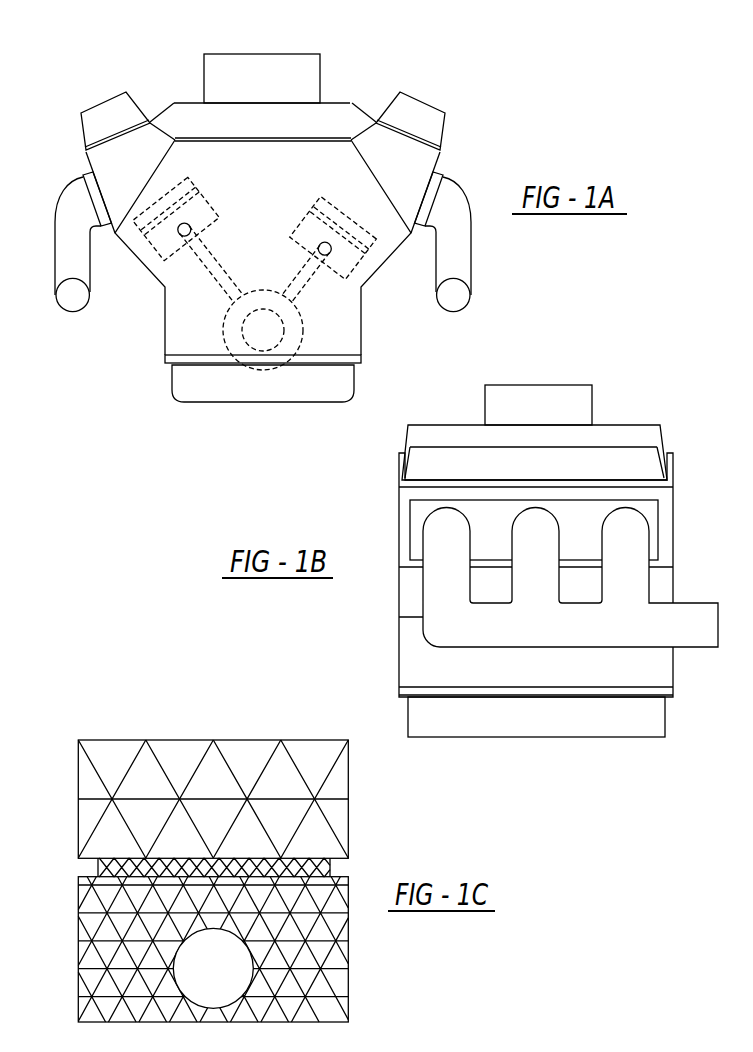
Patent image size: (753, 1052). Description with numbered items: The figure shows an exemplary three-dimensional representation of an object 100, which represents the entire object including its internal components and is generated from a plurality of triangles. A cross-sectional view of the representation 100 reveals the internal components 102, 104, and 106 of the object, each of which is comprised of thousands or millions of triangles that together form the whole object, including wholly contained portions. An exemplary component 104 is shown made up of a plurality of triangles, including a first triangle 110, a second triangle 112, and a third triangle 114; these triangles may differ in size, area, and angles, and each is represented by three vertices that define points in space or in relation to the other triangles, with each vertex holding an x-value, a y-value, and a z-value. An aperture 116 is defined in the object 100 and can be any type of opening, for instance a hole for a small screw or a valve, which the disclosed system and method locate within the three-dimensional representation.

In FIG. 1A, the three-dimensional representation of an object 100 is at (163, 47).
In FIG. 1B, the three-dimensional representation of an object 100 is at (632, 408).
In FIG. 1B, the internal component 102 is at (455, 420).
In FIG. 1B, the internal component 104 is at (547, 385).
In FIG. 1C, the internal component 104 is at (190, 708).
In FIG. 1B, the internal component 106 is at (438, 535).
In FIG. 1C, the first triangle 110 is at (93, 785).
In FIG. 1C, the second triangle 112 is at (97, 868).
In FIG. 1C, the third triangle 114 is at (92, 917).
In FIG. 1C, the aperture 116 is at (253, 960).